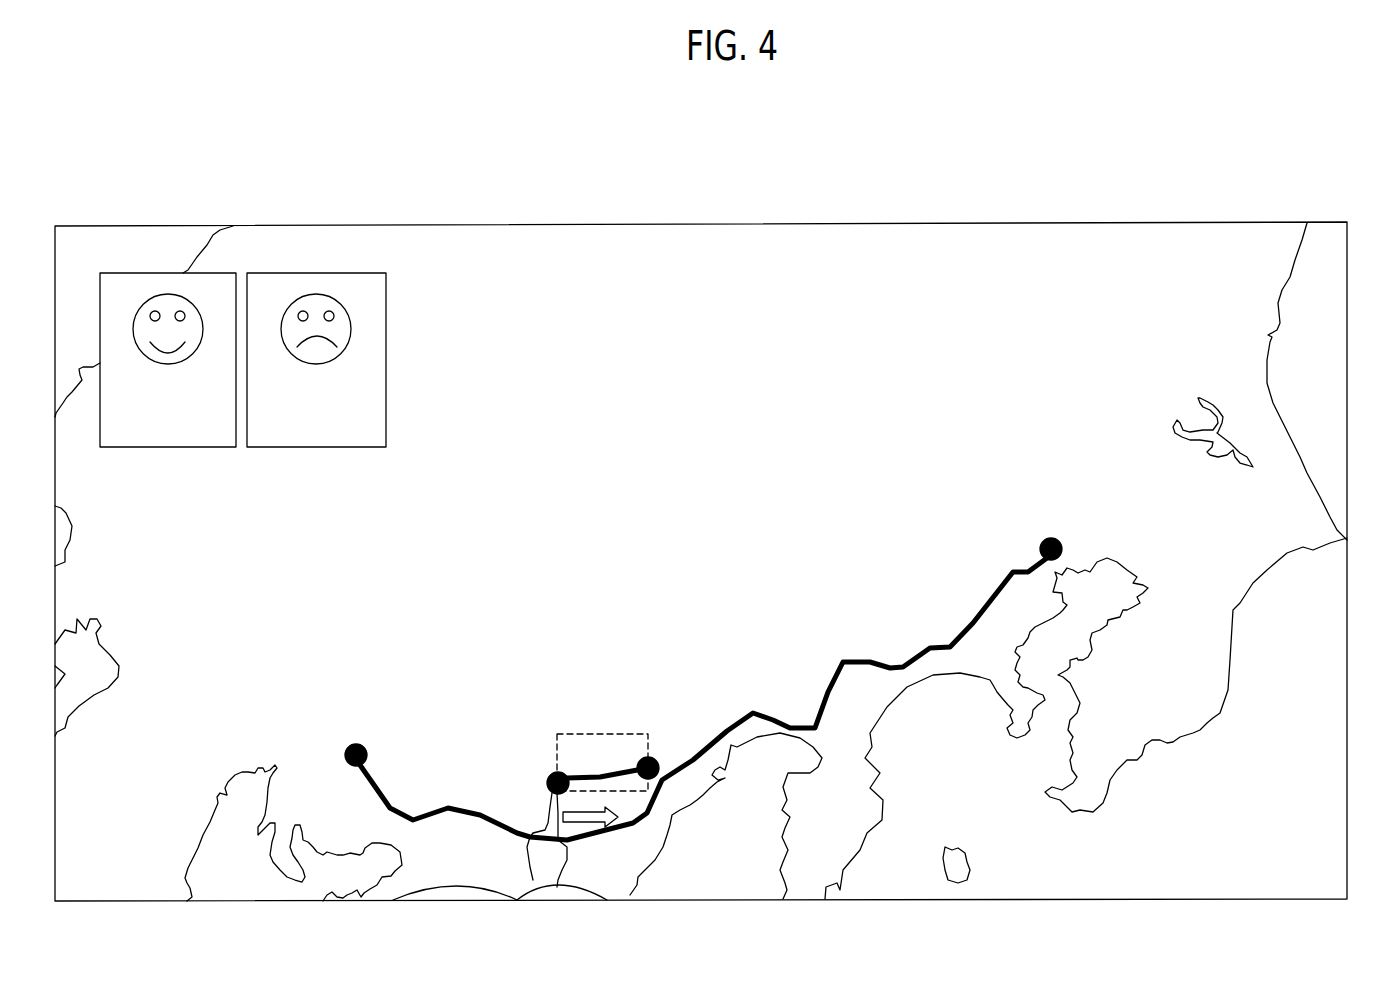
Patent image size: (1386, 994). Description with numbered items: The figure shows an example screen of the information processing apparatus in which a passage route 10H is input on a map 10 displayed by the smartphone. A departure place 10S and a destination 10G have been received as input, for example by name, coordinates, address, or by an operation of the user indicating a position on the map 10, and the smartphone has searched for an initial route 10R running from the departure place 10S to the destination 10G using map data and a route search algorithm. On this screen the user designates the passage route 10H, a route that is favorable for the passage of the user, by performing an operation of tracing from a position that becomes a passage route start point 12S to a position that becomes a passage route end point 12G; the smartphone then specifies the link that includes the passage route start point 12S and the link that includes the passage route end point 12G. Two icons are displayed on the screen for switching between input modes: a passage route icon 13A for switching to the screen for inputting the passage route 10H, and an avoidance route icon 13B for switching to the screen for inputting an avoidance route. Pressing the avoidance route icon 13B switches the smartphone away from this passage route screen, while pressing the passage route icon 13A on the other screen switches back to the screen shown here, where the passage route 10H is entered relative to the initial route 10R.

The map 10 is at (1300, 223).
The departure place 10S is at (358, 766).
The destination 10G is at (1058, 556).
The passage route 10H is at (635, 792).
The initial route 10R is at (727, 732).
The passage route start point 12S is at (556, 783).
The passage route end point 12G is at (649, 768).
The passage route icon 13A is at (168, 273).
The avoidance route icon 13B is at (316, 273).